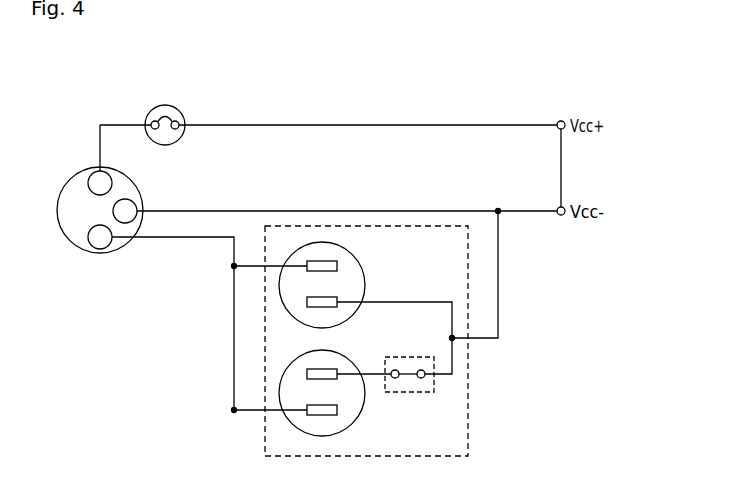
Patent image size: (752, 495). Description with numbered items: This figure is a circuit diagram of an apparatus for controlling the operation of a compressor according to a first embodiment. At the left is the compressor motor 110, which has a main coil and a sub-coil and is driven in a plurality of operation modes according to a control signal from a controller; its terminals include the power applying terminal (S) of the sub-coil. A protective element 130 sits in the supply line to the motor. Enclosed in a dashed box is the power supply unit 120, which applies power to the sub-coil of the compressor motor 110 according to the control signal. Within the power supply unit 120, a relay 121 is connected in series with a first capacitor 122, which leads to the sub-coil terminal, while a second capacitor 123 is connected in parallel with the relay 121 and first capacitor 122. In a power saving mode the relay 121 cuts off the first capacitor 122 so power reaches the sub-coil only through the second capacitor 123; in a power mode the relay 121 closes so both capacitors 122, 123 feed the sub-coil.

The compressor motor 110 is at (100, 253).
The power supply unit 120 is at (468, 399).
The relay 121 is at (411, 357).
The first capacitor 122 is at (362, 416).
The second capacitor 123 is at (363, 264).
The overload protector 130 is at (163, 104).